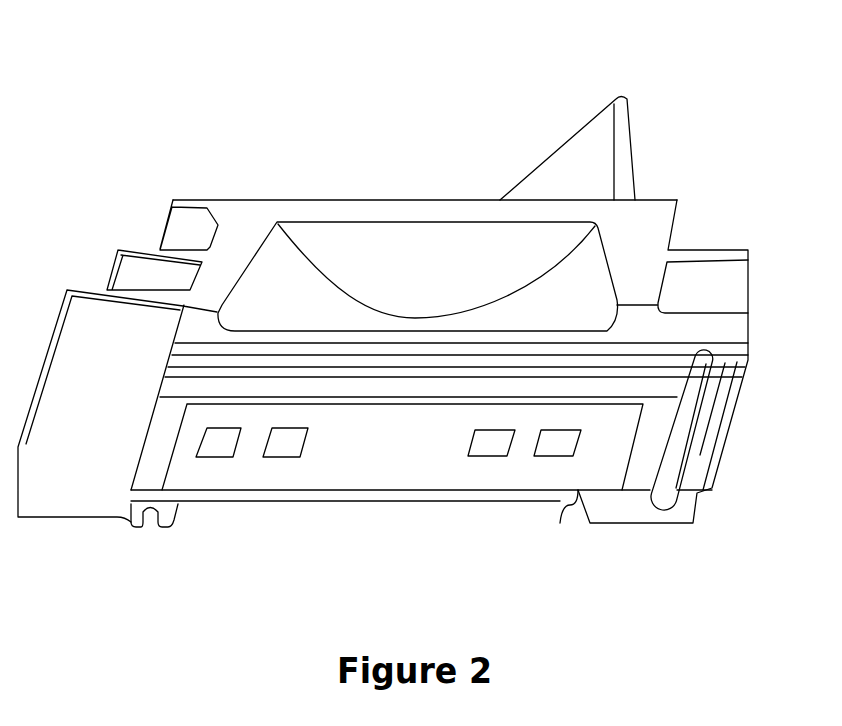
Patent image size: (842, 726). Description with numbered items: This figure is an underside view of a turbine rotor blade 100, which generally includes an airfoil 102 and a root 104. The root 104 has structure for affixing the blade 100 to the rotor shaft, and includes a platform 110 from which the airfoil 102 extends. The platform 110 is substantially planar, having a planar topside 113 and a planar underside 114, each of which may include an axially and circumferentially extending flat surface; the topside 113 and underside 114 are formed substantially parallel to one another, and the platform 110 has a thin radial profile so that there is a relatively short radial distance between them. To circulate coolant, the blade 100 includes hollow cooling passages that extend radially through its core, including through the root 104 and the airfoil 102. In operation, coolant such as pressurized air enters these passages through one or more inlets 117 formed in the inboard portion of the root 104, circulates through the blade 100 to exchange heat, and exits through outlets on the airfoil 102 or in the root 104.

The turbine rotor blade 100 is at (140, 69).
The platform 110 is at (178, 179).
The topside 113 is at (322, 200).
The underside 114 is at (445, 288).
The inlets 117 is at (220, 445).
The airfoil 102 is at (587, 148).
The root 104 is at (780, 406).